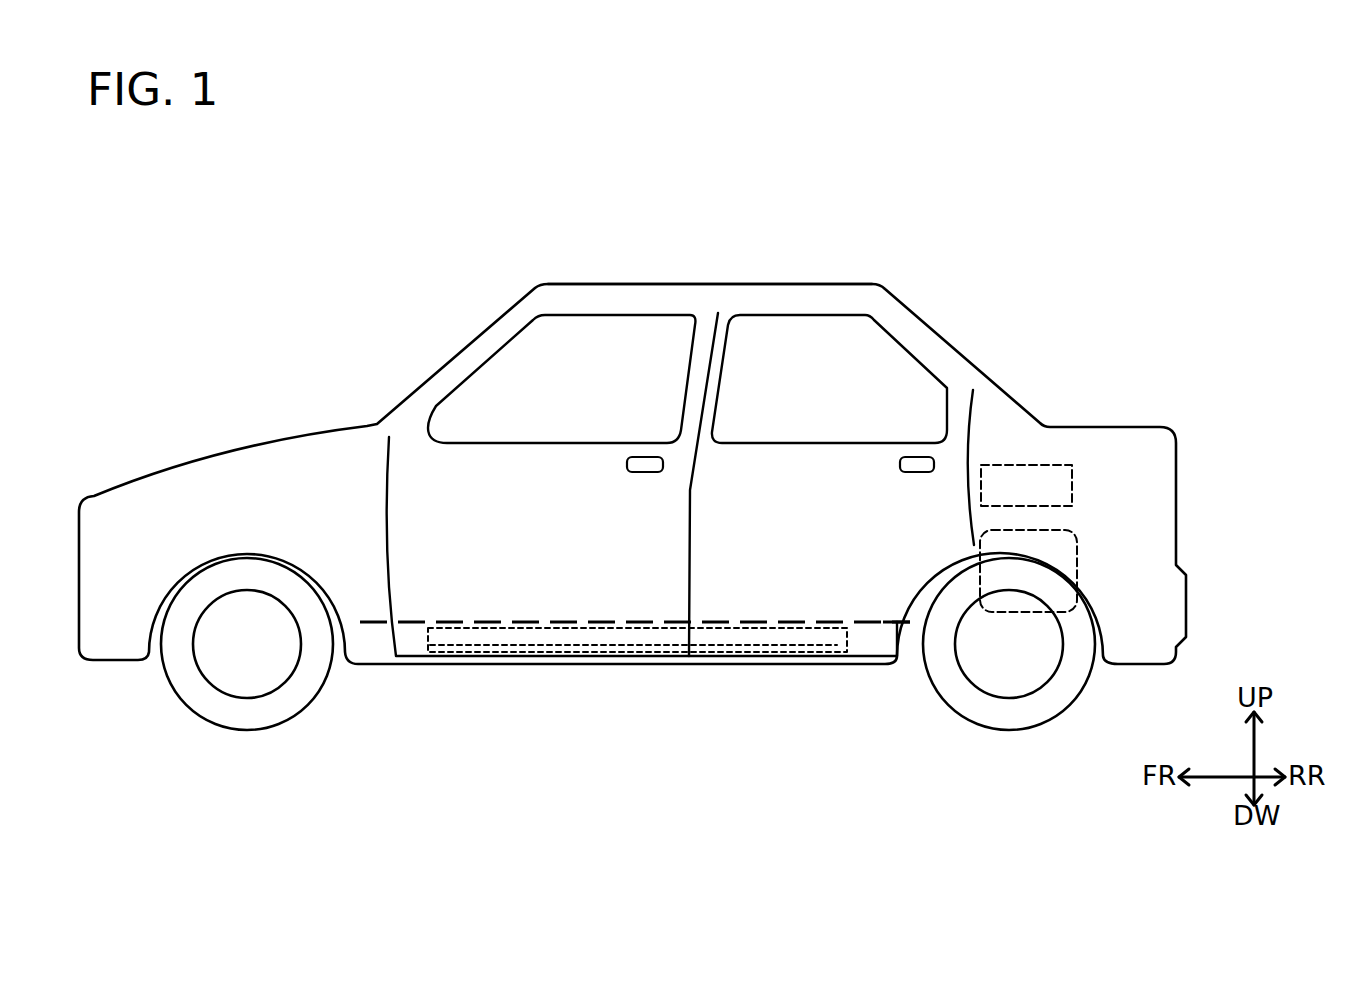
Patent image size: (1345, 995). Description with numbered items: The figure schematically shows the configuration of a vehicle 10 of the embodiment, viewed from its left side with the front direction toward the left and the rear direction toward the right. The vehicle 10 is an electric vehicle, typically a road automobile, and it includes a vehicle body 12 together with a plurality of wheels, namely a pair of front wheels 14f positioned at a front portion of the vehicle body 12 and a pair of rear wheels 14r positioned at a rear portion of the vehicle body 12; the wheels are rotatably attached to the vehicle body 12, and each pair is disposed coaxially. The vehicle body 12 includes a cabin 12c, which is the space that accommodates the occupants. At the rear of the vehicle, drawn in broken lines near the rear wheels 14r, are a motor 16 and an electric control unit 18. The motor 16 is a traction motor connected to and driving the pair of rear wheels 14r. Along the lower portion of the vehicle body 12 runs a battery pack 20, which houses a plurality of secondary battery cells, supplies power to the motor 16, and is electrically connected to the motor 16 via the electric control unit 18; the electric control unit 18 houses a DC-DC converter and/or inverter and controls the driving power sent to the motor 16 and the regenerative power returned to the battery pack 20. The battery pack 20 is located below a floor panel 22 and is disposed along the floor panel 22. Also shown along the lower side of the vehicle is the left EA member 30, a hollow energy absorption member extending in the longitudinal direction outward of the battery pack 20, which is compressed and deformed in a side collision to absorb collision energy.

The vehicle 10 is at (1122, 275).
The vehicle body 12 is at (725, 283).
The cabin 12c is at (517, 377).
The front wheels 14f is at (215, 698).
The rear wheels 14r is at (1008, 708).
The motor 16 is at (1078, 545).
The electric control unit 18 is at (1074, 487).
The battery pack 20 is at (735, 640).
The floor panel 22 is at (850, 625).
The left EA member 30 is at (490, 650).